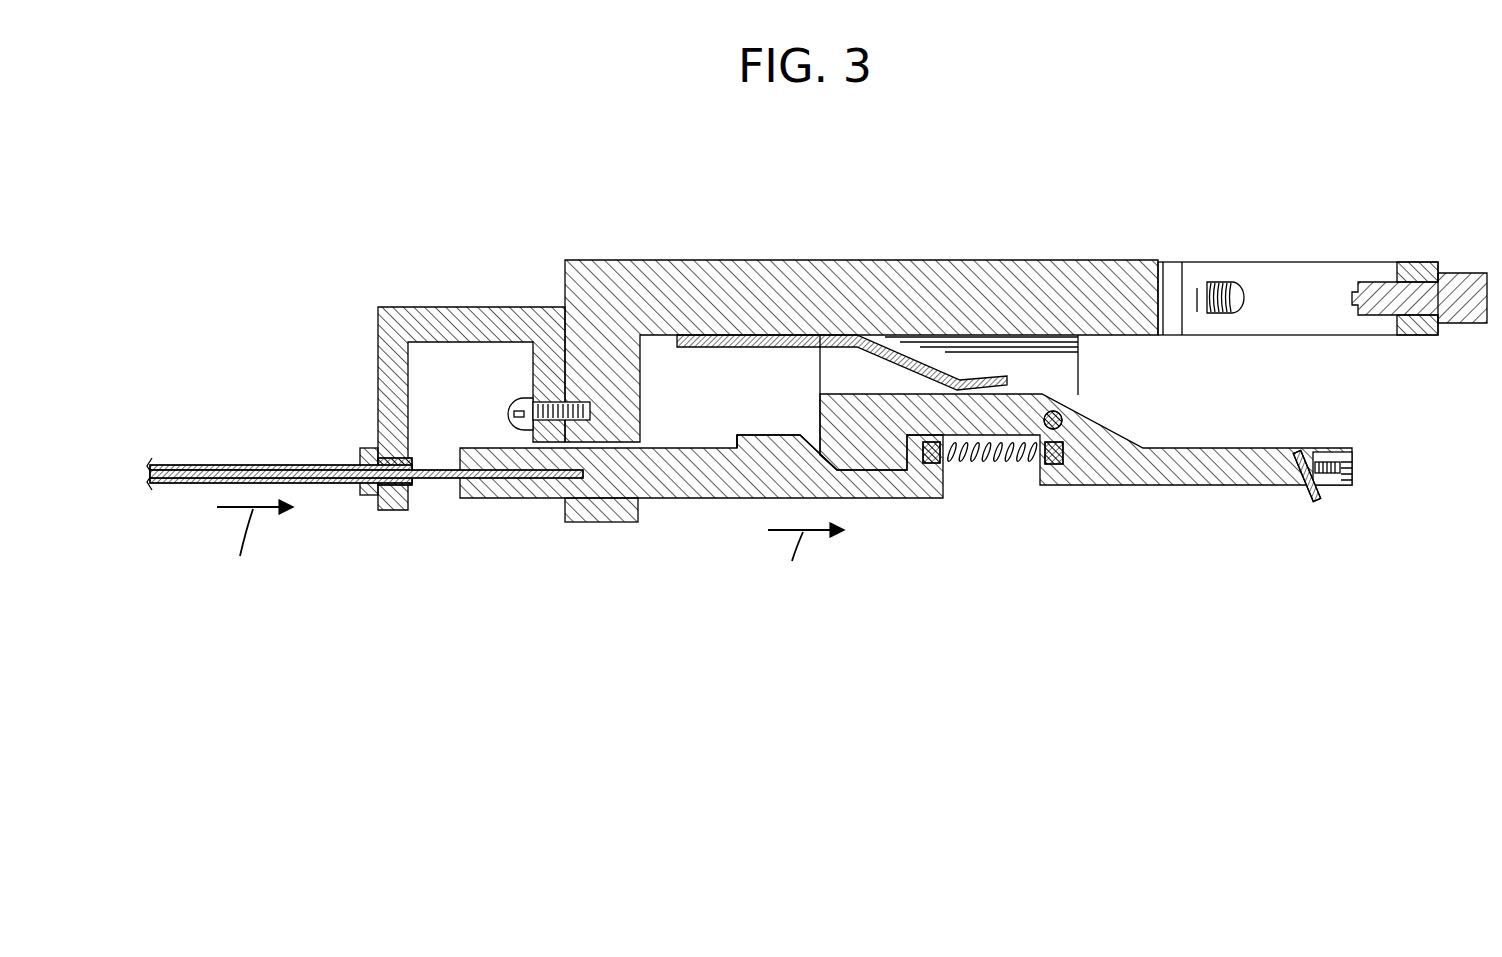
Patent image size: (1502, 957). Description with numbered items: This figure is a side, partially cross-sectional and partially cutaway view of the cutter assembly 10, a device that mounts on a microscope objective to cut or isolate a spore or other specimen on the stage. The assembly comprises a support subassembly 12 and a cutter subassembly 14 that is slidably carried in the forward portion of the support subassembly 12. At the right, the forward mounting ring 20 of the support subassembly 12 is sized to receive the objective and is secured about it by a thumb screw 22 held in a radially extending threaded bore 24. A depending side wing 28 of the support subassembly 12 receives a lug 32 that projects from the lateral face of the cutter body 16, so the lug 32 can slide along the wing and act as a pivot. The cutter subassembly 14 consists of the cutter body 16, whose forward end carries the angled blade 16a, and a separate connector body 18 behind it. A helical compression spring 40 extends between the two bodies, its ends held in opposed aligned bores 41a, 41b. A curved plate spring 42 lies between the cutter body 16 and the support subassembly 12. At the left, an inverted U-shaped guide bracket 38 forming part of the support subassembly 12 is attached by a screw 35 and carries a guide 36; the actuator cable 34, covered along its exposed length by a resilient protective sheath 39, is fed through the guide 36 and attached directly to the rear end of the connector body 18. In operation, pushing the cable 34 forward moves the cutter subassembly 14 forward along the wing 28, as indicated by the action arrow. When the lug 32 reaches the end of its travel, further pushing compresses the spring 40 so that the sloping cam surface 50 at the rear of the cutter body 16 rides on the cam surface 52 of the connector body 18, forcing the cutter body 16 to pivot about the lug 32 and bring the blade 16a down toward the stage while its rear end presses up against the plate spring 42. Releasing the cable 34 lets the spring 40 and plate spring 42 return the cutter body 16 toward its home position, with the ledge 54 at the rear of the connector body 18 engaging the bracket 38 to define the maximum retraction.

The cutter assembly 10 is at (884, 216).
The support subassembly 12 is at (692, 264).
The cutter subassembly 14 is at (1016, 482).
The cutter body 16 is at (1353, 462).
The blade 16a is at (1312, 500).
The connector body 18 is at (512, 500).
The forward mounting ring 20 is at (1283, 322).
The thumb screw 22 is at (1462, 272).
The threaded bore 24 is at (1240, 292).
The side wing 28 is at (1060, 362).
The lug 32 is at (1066, 413).
The actuator cable 34 is at (204, 470).
The screw 35 is at (523, 405).
The guide 36 is at (367, 497).
The guide bracket 38 is at (468, 310).
The protective sheath 39 is at (282, 467).
The helical compression spring 40 is at (978, 465).
The bore 41a is at (930, 465).
The bore 41b is at (1067, 455).
The plate spring 42 is at (942, 370).
The sloping cam surface 50 is at (823, 457).
The cam surface 52 is at (818, 427).
The ledge 54 is at (737, 440).